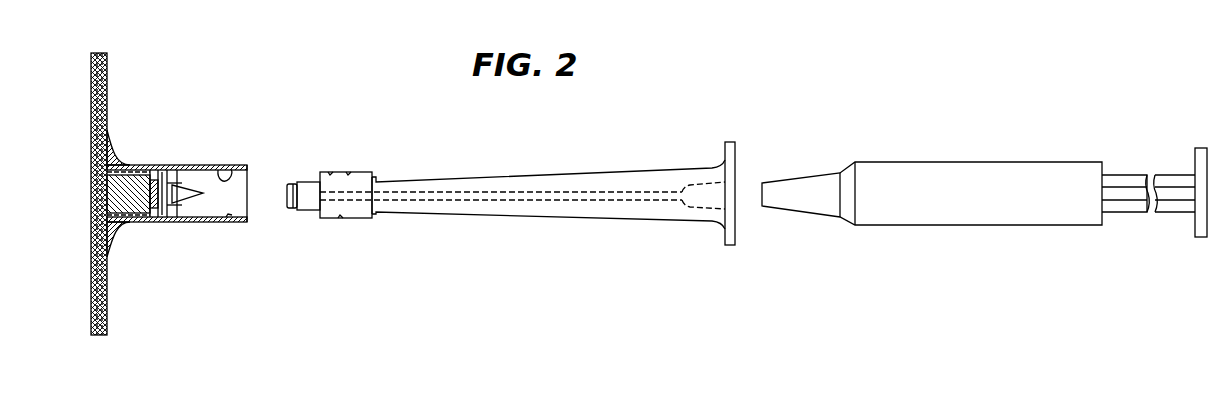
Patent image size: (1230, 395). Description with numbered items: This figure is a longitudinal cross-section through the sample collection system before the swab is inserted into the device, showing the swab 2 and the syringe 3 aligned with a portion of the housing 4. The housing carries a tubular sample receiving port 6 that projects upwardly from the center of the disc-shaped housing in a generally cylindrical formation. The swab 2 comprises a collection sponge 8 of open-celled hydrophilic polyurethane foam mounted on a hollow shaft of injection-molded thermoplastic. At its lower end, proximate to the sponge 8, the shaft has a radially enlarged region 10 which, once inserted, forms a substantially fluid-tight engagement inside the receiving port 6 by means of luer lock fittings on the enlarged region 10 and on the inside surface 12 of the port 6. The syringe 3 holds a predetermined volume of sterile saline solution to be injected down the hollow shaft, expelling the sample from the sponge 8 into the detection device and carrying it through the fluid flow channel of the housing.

The swab 2 is at (522, 177).
The syringe 3 is at (998, 162).
The wall 4 is at (91, 91).
The sample receiving port 6 is at (150, 165).
The collection sponge 8 is at (300, 180).
The radially enlarged region 10 is at (356, 172).
The inside surface 12 is at (229, 180).